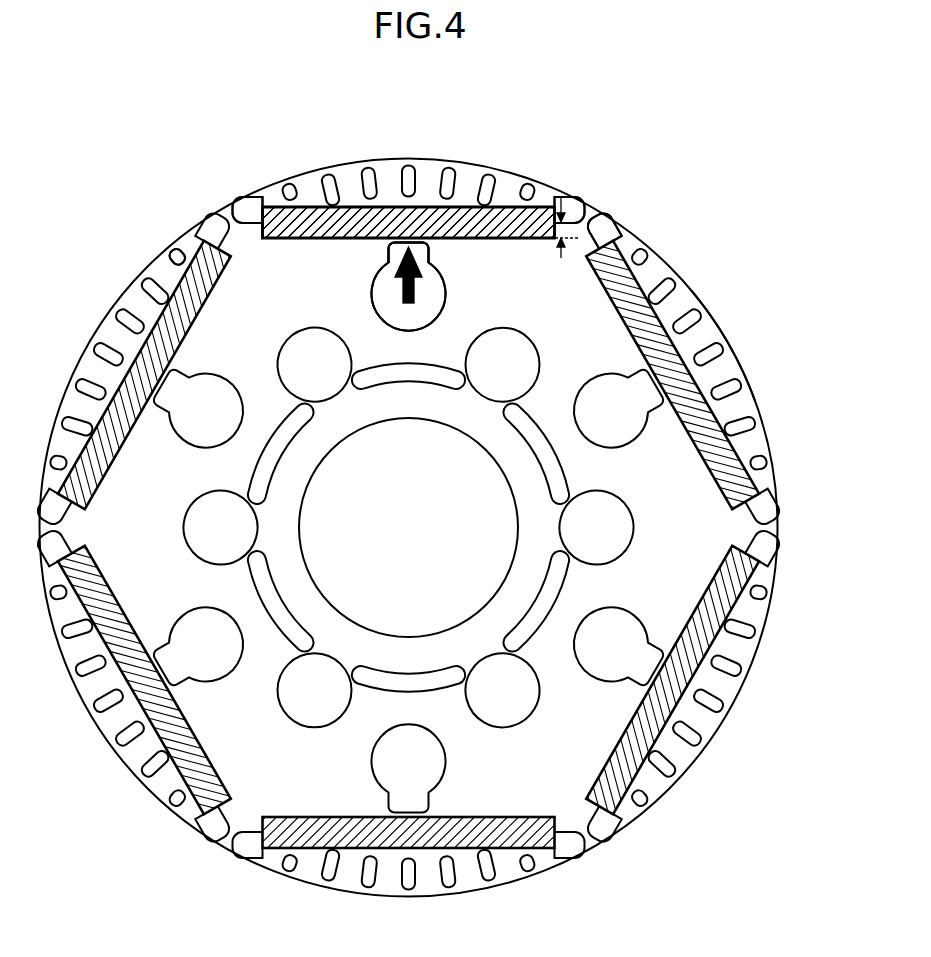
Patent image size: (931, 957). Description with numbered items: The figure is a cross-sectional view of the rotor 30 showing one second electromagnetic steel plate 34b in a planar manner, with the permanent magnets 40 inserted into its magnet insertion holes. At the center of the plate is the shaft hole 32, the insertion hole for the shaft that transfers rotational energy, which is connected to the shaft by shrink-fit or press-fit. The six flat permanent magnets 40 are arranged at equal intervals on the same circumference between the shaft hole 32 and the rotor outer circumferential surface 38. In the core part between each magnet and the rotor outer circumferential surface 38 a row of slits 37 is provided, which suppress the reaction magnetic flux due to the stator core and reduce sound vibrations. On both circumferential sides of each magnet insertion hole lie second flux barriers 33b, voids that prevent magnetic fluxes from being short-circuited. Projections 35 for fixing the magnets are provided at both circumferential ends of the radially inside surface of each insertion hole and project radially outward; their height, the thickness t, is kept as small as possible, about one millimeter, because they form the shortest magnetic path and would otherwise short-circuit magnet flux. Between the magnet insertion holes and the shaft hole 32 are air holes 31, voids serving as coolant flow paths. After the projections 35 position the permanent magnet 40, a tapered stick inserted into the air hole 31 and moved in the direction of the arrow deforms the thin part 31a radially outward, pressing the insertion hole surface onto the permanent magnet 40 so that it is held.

The rotor 30 is at (599, 147).
The air hole 31 is at (425, 298).
The thin part 31a is at (409, 242).
The shaft hole 32 is at (492, 498).
The second flux barrier 33b is at (596, 222).
The second electromagnetic steel plate 34b is at (257, 278).
The projection 35 is at (587, 232).
The slit 37 is at (166, 255).
The rotor outer circumferential surface 38 is at (740, 352).
The permanent magnet 40 is at (507, 218).